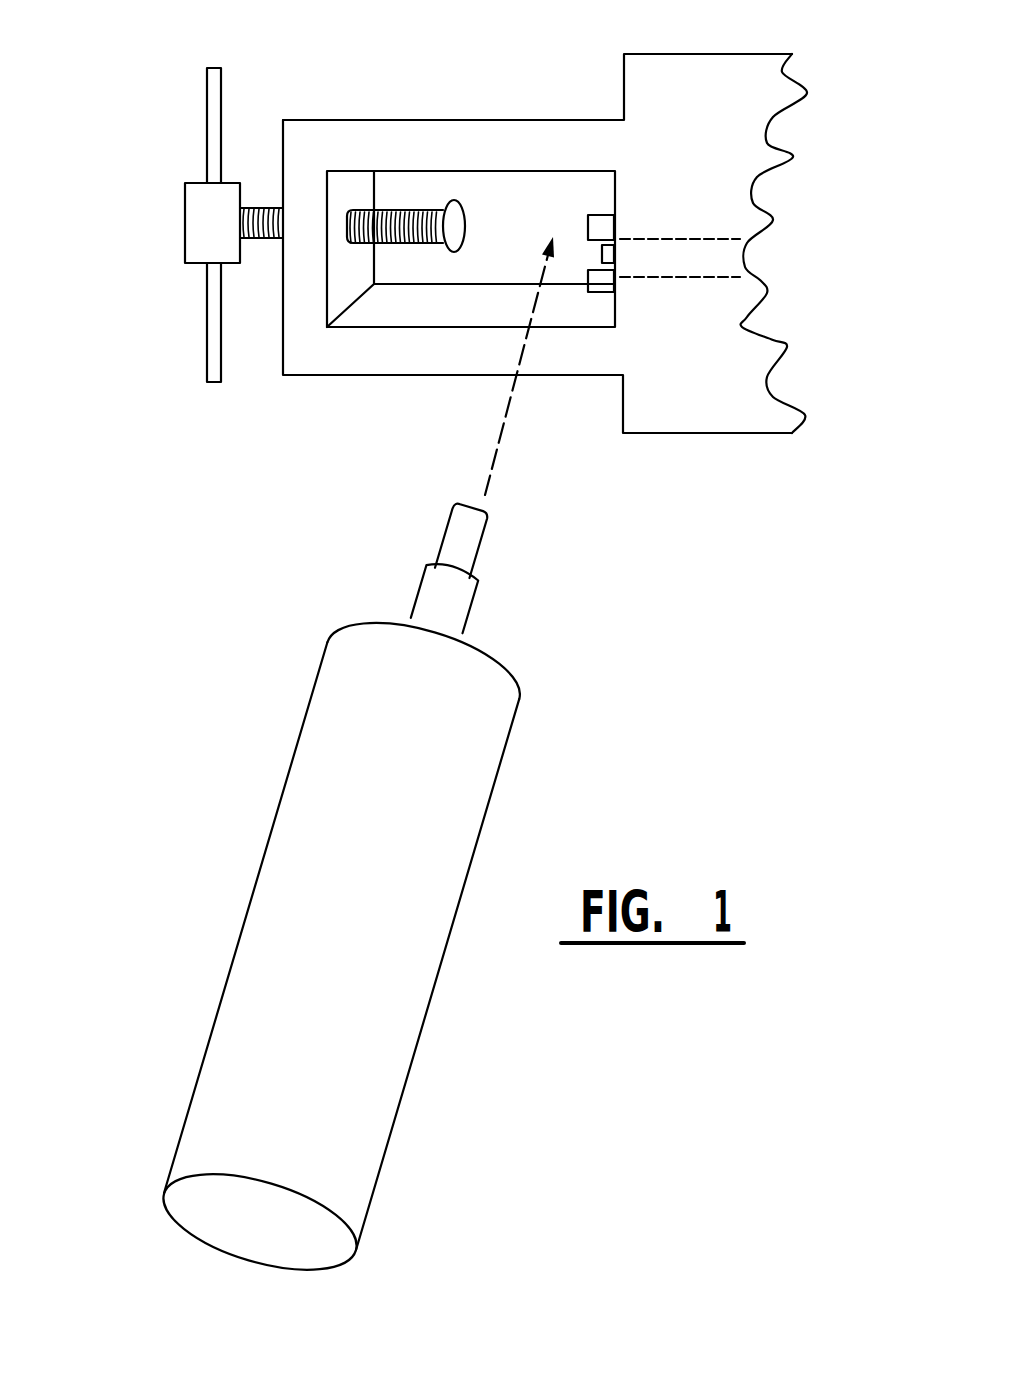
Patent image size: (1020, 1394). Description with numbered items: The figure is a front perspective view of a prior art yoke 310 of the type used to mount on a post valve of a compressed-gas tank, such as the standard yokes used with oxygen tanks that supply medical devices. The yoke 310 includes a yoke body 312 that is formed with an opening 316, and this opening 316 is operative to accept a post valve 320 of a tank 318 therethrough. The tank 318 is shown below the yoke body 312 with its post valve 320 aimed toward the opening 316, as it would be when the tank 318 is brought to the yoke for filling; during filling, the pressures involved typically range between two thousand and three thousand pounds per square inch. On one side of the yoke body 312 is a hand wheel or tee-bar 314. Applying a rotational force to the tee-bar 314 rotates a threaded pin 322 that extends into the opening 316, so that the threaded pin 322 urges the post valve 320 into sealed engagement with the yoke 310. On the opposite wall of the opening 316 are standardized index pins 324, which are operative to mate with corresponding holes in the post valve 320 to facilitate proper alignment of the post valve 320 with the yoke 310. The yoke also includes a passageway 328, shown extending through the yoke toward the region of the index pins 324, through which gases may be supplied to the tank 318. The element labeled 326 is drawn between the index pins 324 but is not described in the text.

The yoke 310 is at (259, 407).
The yoke body 312 is at (335, 120).
The tee-bar 314 is at (207, 110).
The opening 316 is at (513, 201).
The tank 318 is at (293, 755).
The post valve 320 is at (420, 573).
The threaded pin 322 is at (424, 243).
The index pins 324 is at (596, 215).
The sensor 326 is at (602, 256).
The passageway 328 is at (727, 265).